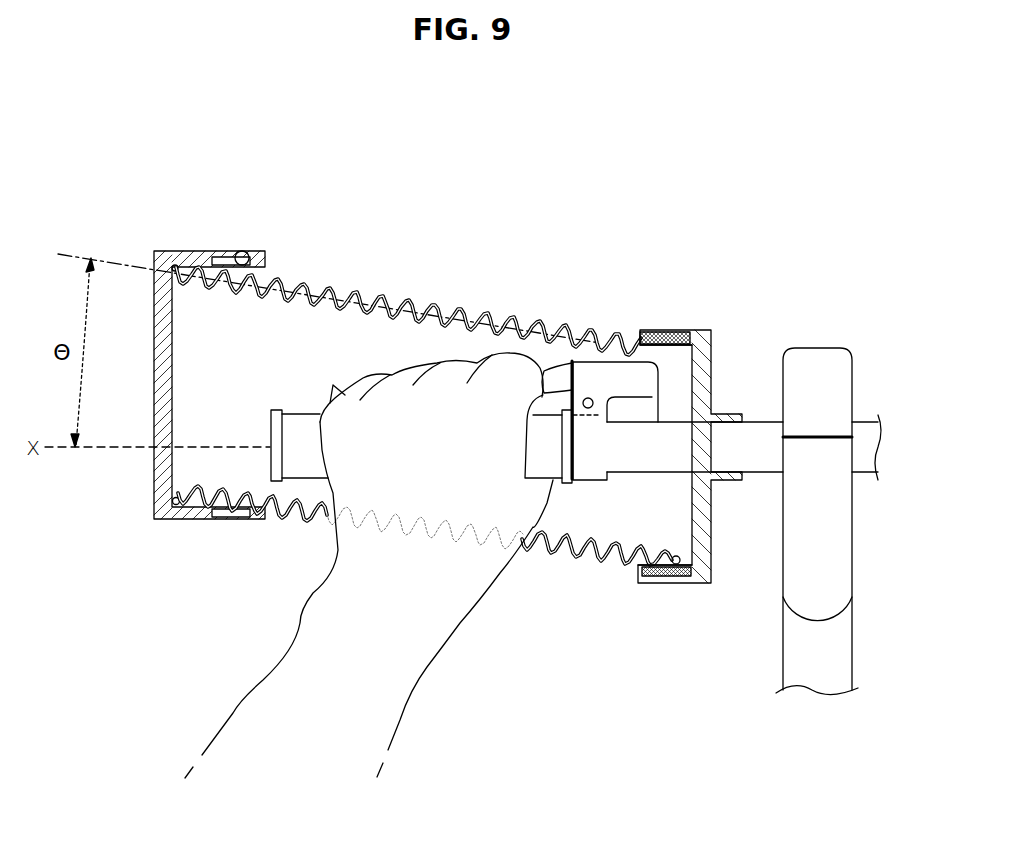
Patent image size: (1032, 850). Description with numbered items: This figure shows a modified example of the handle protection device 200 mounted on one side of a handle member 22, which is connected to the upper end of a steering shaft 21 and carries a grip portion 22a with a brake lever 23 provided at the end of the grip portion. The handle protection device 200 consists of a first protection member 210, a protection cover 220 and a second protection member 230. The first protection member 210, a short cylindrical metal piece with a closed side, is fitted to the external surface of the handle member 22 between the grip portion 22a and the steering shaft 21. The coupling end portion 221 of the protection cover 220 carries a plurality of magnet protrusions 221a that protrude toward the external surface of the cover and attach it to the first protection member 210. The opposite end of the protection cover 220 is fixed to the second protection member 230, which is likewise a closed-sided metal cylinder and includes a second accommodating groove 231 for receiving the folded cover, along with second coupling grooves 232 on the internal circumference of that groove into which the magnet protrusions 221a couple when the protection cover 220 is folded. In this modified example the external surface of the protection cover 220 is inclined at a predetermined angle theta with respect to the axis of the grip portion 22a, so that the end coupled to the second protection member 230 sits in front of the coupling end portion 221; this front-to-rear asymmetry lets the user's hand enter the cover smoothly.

The steering shaft 21 is at (838, 660).
The handle member 22 is at (752, 433).
The grip portion 22a is at (300, 425).
The brake lever 23 is at (558, 373).
The handle protection device 200 is at (300, 237).
The first protection member 210 is at (708, 328).
The protection cover 220 is at (405, 296).
The coupling end portion 221 is at (690, 580).
The magnet protrusions 221a is at (662, 330).
The second protection member 230 is at (166, 249).
The second accommodating groove 231 is at (205, 502).
The second coupling grooves 232 is at (232, 257).